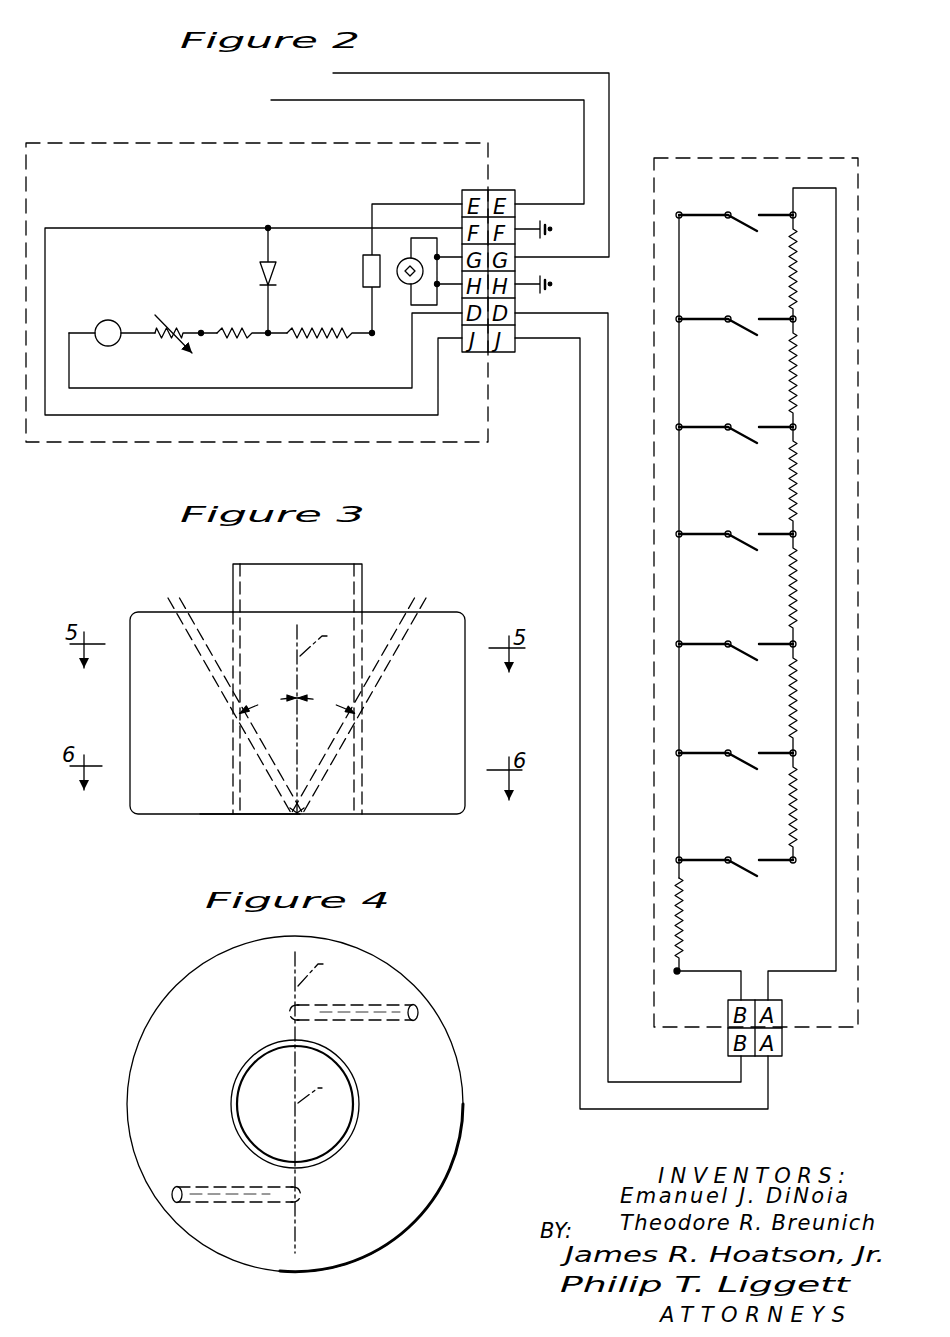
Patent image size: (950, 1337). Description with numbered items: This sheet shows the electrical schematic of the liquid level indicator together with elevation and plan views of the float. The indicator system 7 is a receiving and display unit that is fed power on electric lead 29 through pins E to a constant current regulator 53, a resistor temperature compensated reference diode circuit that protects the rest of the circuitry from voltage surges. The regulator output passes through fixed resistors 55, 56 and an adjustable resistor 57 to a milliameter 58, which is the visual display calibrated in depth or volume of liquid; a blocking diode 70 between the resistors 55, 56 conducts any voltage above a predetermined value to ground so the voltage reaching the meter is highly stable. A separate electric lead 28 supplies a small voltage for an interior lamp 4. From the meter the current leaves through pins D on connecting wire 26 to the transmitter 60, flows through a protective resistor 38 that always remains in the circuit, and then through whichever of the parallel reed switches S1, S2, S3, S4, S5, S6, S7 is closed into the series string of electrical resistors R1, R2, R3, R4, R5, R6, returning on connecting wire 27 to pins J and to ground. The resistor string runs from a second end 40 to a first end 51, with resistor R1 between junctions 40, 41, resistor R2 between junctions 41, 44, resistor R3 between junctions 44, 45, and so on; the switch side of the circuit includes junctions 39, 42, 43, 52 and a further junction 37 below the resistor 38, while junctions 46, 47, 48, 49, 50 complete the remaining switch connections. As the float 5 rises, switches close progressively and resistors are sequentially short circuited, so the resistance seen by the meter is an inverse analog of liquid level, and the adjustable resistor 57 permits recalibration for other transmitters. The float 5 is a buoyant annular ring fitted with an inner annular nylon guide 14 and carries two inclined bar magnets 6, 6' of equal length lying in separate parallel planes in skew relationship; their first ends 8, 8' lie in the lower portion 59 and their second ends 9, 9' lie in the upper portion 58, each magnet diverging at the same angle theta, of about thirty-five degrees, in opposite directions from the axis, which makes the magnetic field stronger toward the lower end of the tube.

In FIG. 2, the indicator system 7 is at (162, 138).
In FIG. 2, the electric lead 28 is at (434, 73).
In FIG. 2, the electric lead 29 is at (440, 101).
In FIG. 2, the milliameter 58 is at (106, 318).
In FIG. 3, the milliameter 58 is at (372, 628).
In FIG. 4, the milliameter 58 is at (440, 1138).
In FIG. 2, the blocking diode 70 is at (258, 271).
In FIG. 2, the constant current regulator 53 is at (363, 270).
In FIG. 2, the interior lamp 4 is at (400, 283).
In FIG. 2, the adjustable resistor 57 is at (168, 340).
In FIG. 2, the fixed resistor 56 is at (234, 340).
In FIG. 2, the fixed resistor 55 is at (316, 338).
In FIG. 2, the transmitter 60 is at (757, 153).
In FIG. 2, the junction 52 is at (679, 215).
In FIG. 2, the first end 51 is at (793, 215).
In FIG. 2, the switch terminal 50 is at (679, 319).
In FIG. 2, the resistor tap 49 is at (793, 319).
In FIG. 2, the switch terminal 48 is at (679, 427).
In FIG. 2, the resistor tap 47 is at (793, 427).
In FIG. 2, the switch terminal 46 is at (679, 534).
In FIG. 2, the junction 45 is at (793, 534).
In FIG. 2, the junction 43 is at (679, 644).
In FIG. 2, the junction 44 is at (793, 644).
In FIG. 2, the junction 42 is at (679, 753).
In FIG. 2, the junction 41 is at (793, 753).
In FIG. 2, the junction 39 is at (679, 860).
In FIG. 2, the second end 40 is at (793, 860).
In FIG. 2, the protective resistor 38 is at (683, 941).
In FIG. 2, the junction 37 is at (677, 971).
In FIG. 2, the connecting wire 26 is at (607, 1068).
In FIG. 2, the connecting wire 27 is at (617, 1110).
In FIG. 2, the reed switch S1 is at (720, 866).
In FIG. 2, the reed switch S2 is at (720, 759).
In FIG. 2, the reed switch S3 is at (720, 650).
In FIG. 2, the reed switch S4 is at (720, 540).
In FIG. 2, the reed switch S5 is at (720, 433).
In FIG. 2, the reed switch S6 is at (720, 326).
In FIG. 2, the reed switch S7 is at (720, 222).
In FIG. 2, the electrical resistor R1 is at (793, 818).
In FIG. 2, the electrical resistor R2 is at (793, 710).
In FIG. 2, the electrical resistor R3 is at (793, 600).
In FIG. 2, the electrical resistor R4 is at (793, 493).
In FIG. 2, the electrical resistor R5 is at (793, 386).
In FIG. 2, the electrical resistor R6 is at (793, 278).
In FIG. 3, the float 5 is at (130, 713).
In FIG. 4, the float 5 is at (132, 1040).
In FIG. 3, the inner annular nylon guide 14 is at (233, 575).
In FIG. 4, the inner annular nylon guide 14 is at (234, 1090).
In FIG. 3, the second end 9 is at (379, 699).
In FIG. 4, the second end 9 is at (381, 996).
In FIG. 3, the second end 9' is at (209, 697).
In FIG. 4, the second end 9' is at (205, 1213).
In FIG. 3, the bar magnet 6 is at (363, 705).
In FIG. 4, the bar magnet 6 is at (360, 1035).
In FIG. 3, the bar magnet 6' is at (231, 705).
In FIG. 4, the bar magnet 6' is at (230, 1171).
In FIG. 3, the first end 8 is at (311, 831).
In FIG. 4, the first end 8 is at (264, 994).
In FIG. 3, the first end 8' is at (333, 831).
In FIG. 4, the first end 8' is at (318, 1217).
In FIG. 3, the lower portion 59 is at (215, 815).